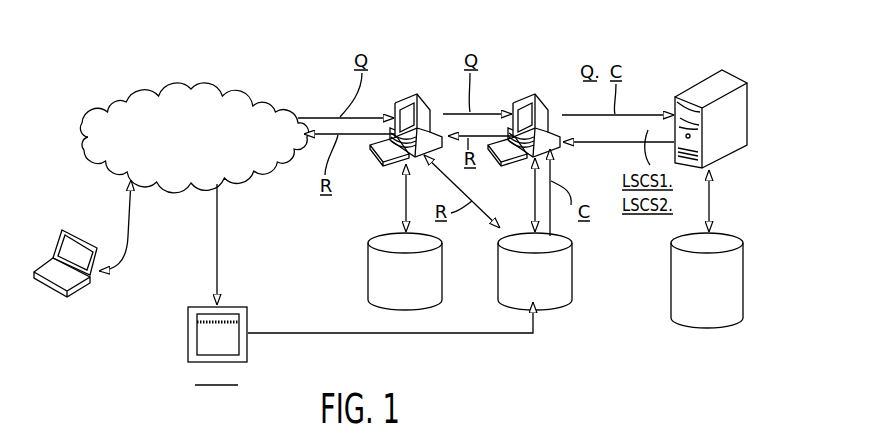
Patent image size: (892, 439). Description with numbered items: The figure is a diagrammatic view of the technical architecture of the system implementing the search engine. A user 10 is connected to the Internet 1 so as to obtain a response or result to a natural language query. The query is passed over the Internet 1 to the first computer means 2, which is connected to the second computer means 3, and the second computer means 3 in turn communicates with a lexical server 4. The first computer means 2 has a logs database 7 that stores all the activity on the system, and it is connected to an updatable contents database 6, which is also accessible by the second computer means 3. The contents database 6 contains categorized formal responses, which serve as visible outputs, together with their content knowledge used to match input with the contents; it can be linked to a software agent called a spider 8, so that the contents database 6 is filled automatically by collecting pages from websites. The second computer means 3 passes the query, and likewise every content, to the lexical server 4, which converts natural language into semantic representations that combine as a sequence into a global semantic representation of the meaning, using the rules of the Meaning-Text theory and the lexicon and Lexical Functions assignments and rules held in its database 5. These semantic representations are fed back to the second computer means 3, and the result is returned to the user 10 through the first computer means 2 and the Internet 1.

The Internet 1 is at (211, 86).
The first computer means 2 is at (414, 94).
The second computer means 3 is at (531, 95).
The lexical server 4 is at (703, 78).
The lexicon and Lexical Functions assignments and rules database 5 is at (704, 322).
The contents database 6 is at (562, 303).
The logs database 7 is at (367, 263).
The spider 8 is at (248, 356).
The user 10 is at (86, 292).